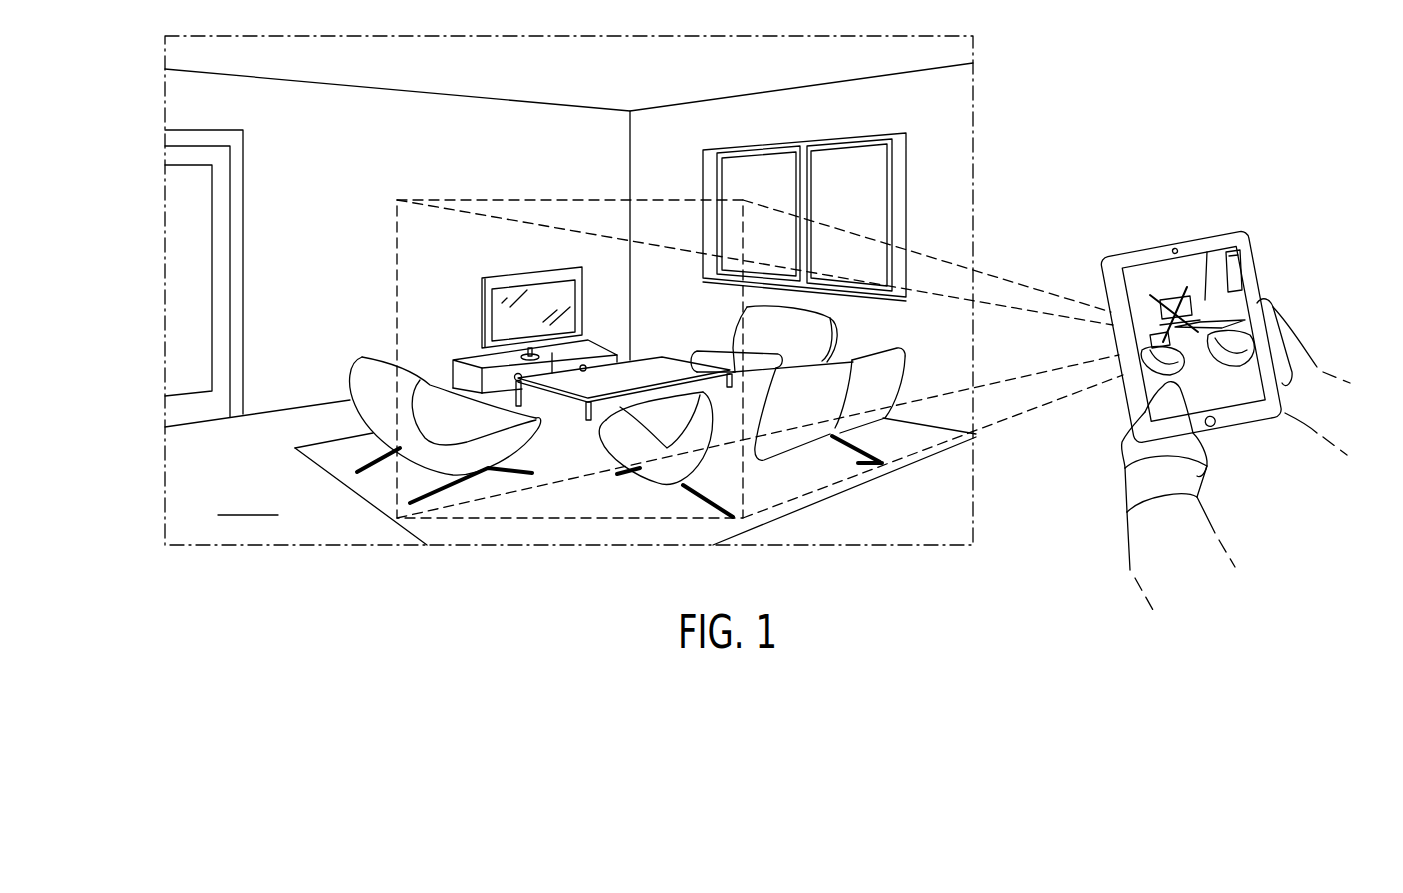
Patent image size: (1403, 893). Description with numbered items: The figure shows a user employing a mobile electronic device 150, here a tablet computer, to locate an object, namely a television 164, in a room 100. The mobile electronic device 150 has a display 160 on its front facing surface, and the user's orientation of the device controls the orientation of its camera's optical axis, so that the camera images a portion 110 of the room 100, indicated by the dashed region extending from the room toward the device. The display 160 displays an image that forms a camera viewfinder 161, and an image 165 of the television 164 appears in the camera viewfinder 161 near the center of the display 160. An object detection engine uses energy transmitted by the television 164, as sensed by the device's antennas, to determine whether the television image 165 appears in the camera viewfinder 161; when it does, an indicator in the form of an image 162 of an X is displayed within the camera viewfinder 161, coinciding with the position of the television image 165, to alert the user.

The room 100 is at (165, 296).
The portion of the room 110 is at (397, 294).
The television 164 is at (531, 275).
The mobile electronic device 150 is at (1135, 252).
The display 160 is at (1180, 273).
The camera viewfinder 161 is at (1238, 263).
The image of an X 162 is at (1190, 322).
The image of the television 165 is at (1150, 320).